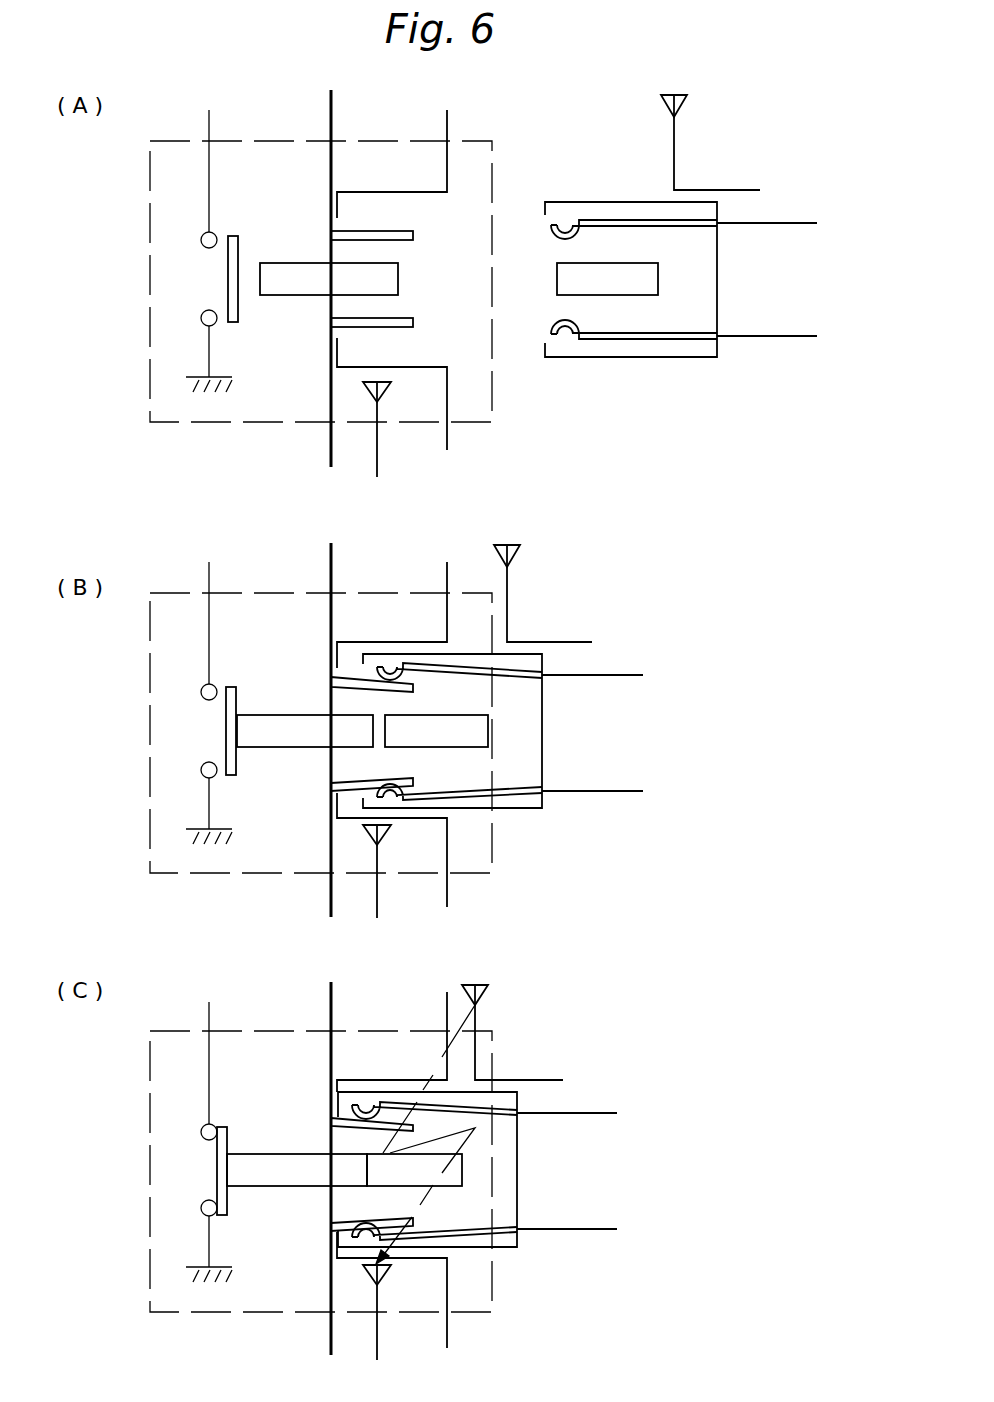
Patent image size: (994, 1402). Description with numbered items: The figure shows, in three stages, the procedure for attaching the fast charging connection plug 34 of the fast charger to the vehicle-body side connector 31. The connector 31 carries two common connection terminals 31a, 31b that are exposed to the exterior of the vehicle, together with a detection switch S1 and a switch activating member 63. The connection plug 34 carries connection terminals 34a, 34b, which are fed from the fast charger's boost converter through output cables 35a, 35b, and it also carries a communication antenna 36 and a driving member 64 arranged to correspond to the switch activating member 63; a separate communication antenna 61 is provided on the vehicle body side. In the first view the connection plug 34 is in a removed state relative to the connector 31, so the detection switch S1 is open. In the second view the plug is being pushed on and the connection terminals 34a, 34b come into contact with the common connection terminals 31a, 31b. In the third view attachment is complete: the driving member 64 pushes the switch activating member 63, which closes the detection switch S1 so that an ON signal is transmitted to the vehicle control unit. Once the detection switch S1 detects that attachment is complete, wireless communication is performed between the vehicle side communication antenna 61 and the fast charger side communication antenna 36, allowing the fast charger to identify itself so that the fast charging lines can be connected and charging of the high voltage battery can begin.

In FIG. 6A, the connector 31 is at (447, 123).
In FIG. 6B, the connector 31 is at (447, 572).
In FIG. 6C, the connector 31 is at (447, 1000).
In FIG. 6A, the common connection terminal 31a is at (413, 323).
In FIG. 6B, the common connection terminal 31a is at (331, 782).
In FIG. 6C, the common connection terminal 31a is at (362, 1221).
In FIG. 6A, the common connection terminal 31b is at (413, 236).
In FIG. 6B, the common connection terminal 31b is at (331, 679).
In FIG. 6C, the common connection terminal 31b is at (331, 1118).
In FIG. 6A, the fast charging connection plug 34 is at (633, 201).
In FIG. 6B, the fast charging connection plug 34 is at (545, 700).
In FIG. 6C, the fast charging connection plug 34 is at (517, 1178).
In FIG. 6A, the connection terminal 34a is at (565, 340).
In FIG. 6B, the connection terminal 34a is at (520, 797).
In FIG. 6C, the connection terminal 34a is at (465, 1235).
In FIG. 6A, the connection terminal 34b is at (560, 233).
In FIG. 6B, the connection terminal 34b is at (525, 668).
In FIG. 6C, the connection terminal 34b is at (470, 1100).
In FIG. 6A, the output cable 35a is at (779, 338).
In FIG. 6B, the output cable 35a is at (615, 795).
In FIG. 6C, the output cable 35a is at (594, 1232).
In FIG. 6A, the output cable 35b is at (801, 221).
In FIG. 6B, the output cable 35b is at (632, 673).
In FIG. 6C, the output cable 35b is at (611, 1112).
In FIG. 6A, the communication antenna 36 is at (688, 100).
In FIG. 6B, the communication antenna 36 is at (520, 552).
In FIG. 6C, the communication antenna 36 is at (490, 996).
In FIG. 6A, the communication antenna 61 is at (383, 392).
In FIG. 6B, the communication antenna 61 is at (383, 835).
In FIG. 6C, the communication antenna 61 is at (383, 1275).
In FIG. 6A, the switch activating member 63 is at (285, 287).
In FIG. 6B, the switch activating member 63 is at (283, 714).
In FIG. 6C, the switch activating member 63 is at (276, 1153).
In FIG. 6A, the driving member 64 is at (658, 281).
In FIG. 6B, the driving member 64 is at (470, 729).
In FIG. 6C, the driving member 64 is at (462, 1165).
In FIG. 6A, the detection switch S1 is at (233, 232).
In FIG. 6B, the detection switch S1 is at (231, 685).
In FIG. 6C, the detection switch S1 is at (225, 1125).